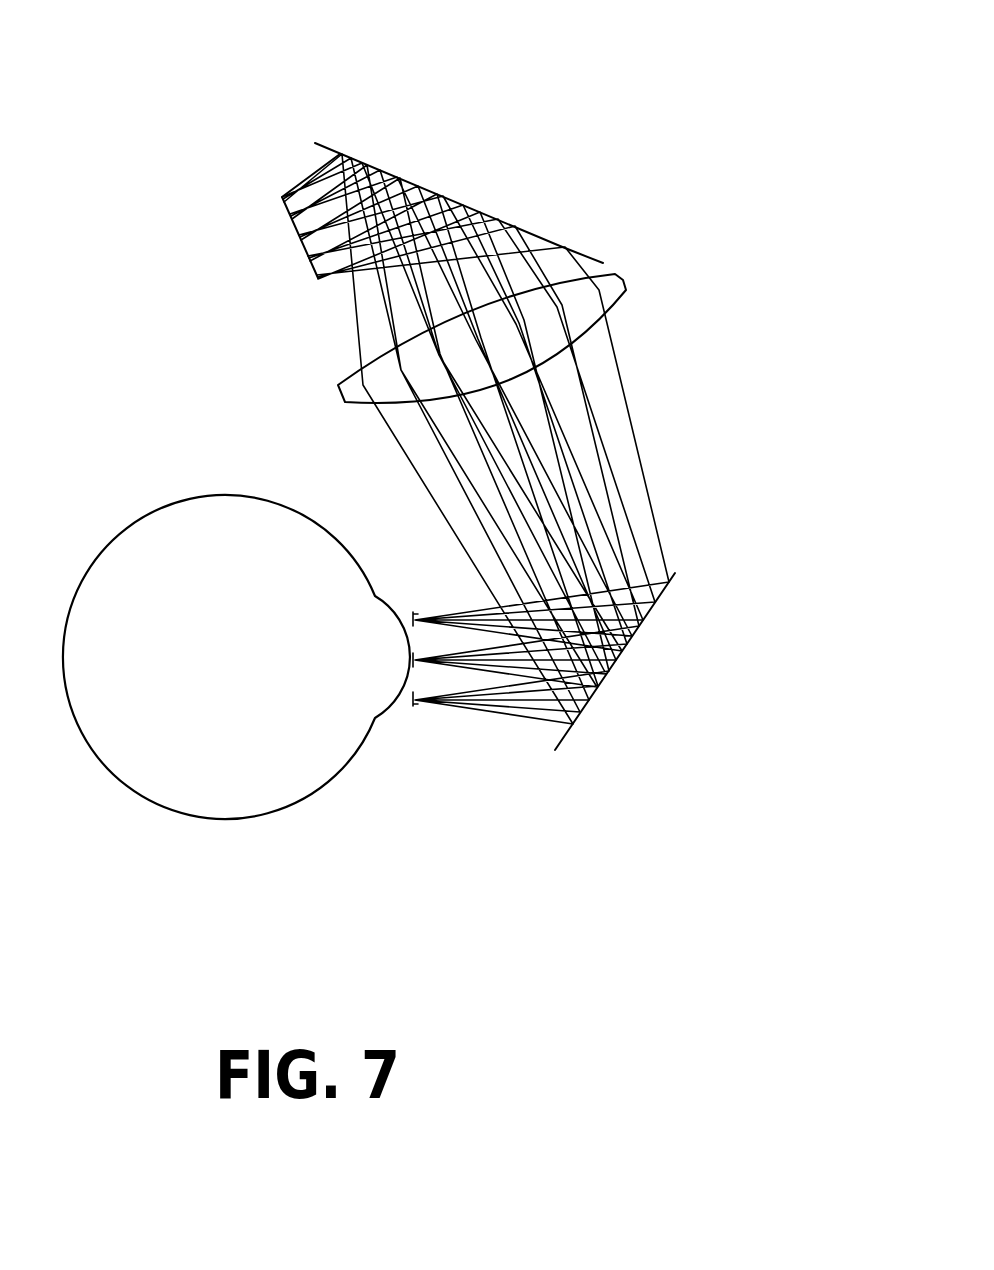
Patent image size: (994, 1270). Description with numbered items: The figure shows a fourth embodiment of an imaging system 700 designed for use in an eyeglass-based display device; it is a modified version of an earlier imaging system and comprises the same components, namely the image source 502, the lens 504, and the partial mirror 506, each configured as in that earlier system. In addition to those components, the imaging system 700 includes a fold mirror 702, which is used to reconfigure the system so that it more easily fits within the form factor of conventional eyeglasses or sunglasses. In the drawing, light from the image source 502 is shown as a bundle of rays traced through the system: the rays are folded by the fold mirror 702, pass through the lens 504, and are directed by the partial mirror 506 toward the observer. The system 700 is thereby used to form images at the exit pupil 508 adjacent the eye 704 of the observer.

The imaging system 700 is at (747, 117).
The fold mirror 702 is at (477, 212).
The image source 502 is at (295, 243).
The lens 504 is at (605, 300).
The partial mirror 506 is at (622, 650).
The eye 704 is at (236, 657).
The exit pupil 508 is at (425, 728).